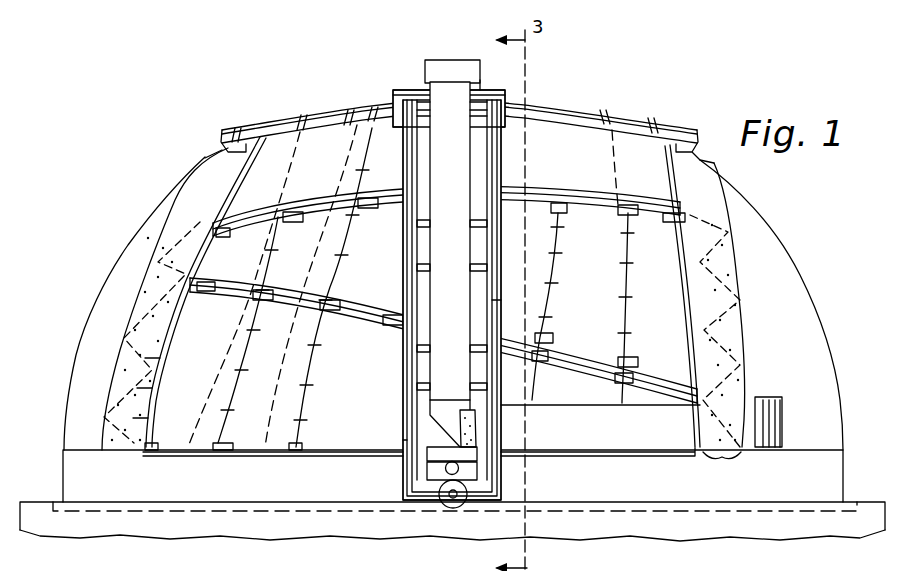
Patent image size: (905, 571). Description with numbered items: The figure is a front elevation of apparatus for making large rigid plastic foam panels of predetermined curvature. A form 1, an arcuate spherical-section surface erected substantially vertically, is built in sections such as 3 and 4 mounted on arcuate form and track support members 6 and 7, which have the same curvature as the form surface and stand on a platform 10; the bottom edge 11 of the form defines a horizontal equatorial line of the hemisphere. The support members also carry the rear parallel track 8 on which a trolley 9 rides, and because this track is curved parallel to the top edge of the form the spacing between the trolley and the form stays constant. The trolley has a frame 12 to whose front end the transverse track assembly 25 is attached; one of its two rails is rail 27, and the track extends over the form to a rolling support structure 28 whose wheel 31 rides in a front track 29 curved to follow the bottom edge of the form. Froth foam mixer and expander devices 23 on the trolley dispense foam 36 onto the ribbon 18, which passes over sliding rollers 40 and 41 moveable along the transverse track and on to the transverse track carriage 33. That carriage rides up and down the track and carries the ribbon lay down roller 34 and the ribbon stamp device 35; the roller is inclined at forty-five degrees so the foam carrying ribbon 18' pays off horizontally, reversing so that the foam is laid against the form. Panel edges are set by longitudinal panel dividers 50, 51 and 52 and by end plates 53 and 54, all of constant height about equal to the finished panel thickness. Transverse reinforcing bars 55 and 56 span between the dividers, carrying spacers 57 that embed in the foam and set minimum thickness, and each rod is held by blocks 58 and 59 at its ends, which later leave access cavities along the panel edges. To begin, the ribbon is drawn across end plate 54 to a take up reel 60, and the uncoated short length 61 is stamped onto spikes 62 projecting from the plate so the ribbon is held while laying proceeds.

The form 1 is at (130, 212).
The form section 3 is at (283, 150).
The form section 4 is at (338, 143).
The form and track support member 6 is at (315, 115).
The form and track support member 7 is at (363, 107).
The rear parallel track 8 is at (581, 110).
The trolley 9 is at (493, 80).
The platform 10 is at (63, 478).
The bottom edge 11 is at (240, 453).
The frame 12 is at (507, 88).
The ribbon 18 is at (744, 465).
The foam carrying ribbon 18' is at (600, 423).
The froth foam mixer and expander device 23 is at (425, 58).
The transverse track assembly 25 is at (512, 173).
The rail 27 is at (498, 292).
The rolling support structure 28 is at (513, 492).
The front track 29 is at (305, 500).
The wheel 31 is at (448, 498).
The transverse track carriage 33 is at (513, 442).
The ribbon lay down roller 34 is at (482, 435).
The ribbon stamp device 35 is at (418, 469).
The foam 36 is at (465, 246).
The sliding roller 40 is at (482, 222).
The sliding roller 41 is at (418, 275).
The longitudinal panel divider 50 is at (278, 452).
The longitudinal panel divider 51 is at (313, 205).
The longitudinal panel divider 52 is at (285, 300).
The end plate 53 is at (113, 362).
The end plate 54 is at (747, 383).
The transverse reinforcing bar 55 is at (227, 403).
The transverse reinforcing bar 56 is at (274, 252).
The spacer 57 is at (233, 350).
The block 58 is at (256, 302).
The block 59 is at (228, 443).
The take up reel 60 is at (782, 397).
The short length of ribbon 61 is at (717, 467).
The spikes 62 is at (127, 411).